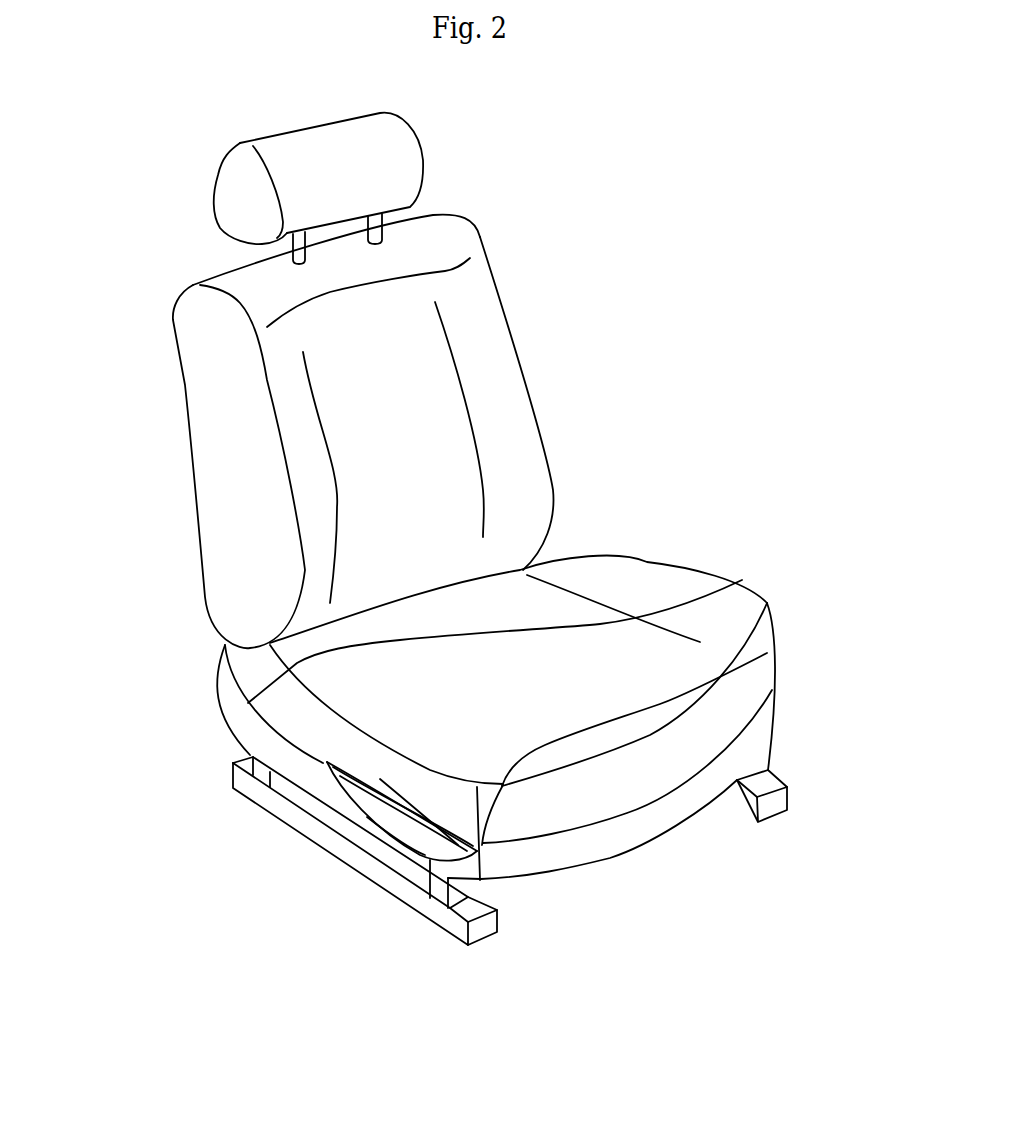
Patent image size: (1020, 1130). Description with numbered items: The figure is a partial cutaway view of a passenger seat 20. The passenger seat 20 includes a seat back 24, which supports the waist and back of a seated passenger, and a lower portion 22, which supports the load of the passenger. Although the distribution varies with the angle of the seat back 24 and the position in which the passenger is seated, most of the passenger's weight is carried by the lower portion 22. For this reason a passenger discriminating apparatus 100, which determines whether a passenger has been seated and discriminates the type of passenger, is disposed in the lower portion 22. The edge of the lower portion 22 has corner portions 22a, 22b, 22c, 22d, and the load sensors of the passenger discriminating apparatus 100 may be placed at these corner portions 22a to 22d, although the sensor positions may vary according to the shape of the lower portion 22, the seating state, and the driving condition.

The passenger seat 20 is at (467, 538).
The lower portion 22 is at (560, 716).
The corner portion 22a is at (767, 653).
The corner portion 22b is at (695, 694).
The corner portion 22c is at (570, 557).
The corner portion 22d is at (700, 600).
The seat back 24 is at (473, 330).
The passenger discriminating apparatus 100 is at (379, 818).